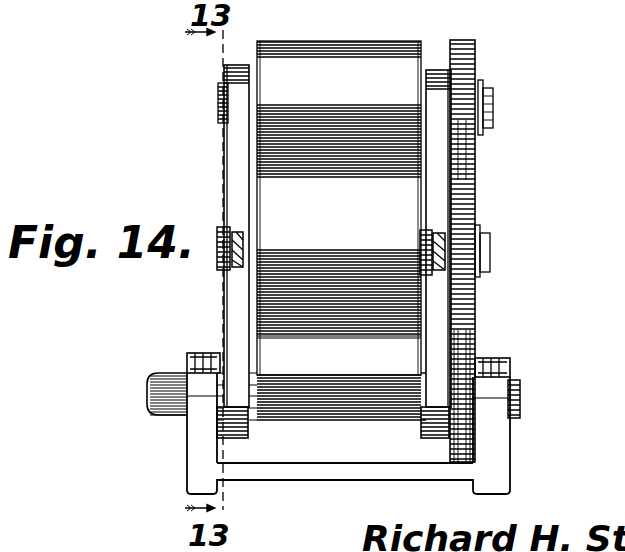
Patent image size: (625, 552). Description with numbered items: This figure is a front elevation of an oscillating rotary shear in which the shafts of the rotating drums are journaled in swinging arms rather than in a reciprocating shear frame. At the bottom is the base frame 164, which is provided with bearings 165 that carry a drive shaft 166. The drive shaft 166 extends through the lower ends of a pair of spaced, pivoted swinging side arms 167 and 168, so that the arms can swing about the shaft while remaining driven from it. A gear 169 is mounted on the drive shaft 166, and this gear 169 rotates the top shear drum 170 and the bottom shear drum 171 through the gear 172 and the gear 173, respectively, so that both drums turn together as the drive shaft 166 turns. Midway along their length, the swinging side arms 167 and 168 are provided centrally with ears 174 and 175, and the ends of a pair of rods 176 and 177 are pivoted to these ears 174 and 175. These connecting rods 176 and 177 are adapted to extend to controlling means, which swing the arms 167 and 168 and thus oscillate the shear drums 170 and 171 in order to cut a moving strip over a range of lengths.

The base frame 164 is at (192, 455).
The bearings 165 is at (512, 366).
The drive shaft 166 is at (152, 398).
The swinging side arm 167 is at (233, 147).
The swinging side arm 168 is at (433, 100).
The gear 169 is at (467, 445).
The top shear drum 170 is at (357, 45).
The bottom shear drum 171 is at (355, 320).
The gear 172 is at (508, 45).
The gear 173 is at (475, 206).
The ear 174 is at (232, 232).
The ear 175 is at (424, 230).
The rod 176 is at (246, 252).
The rod 177 is at (433, 250).